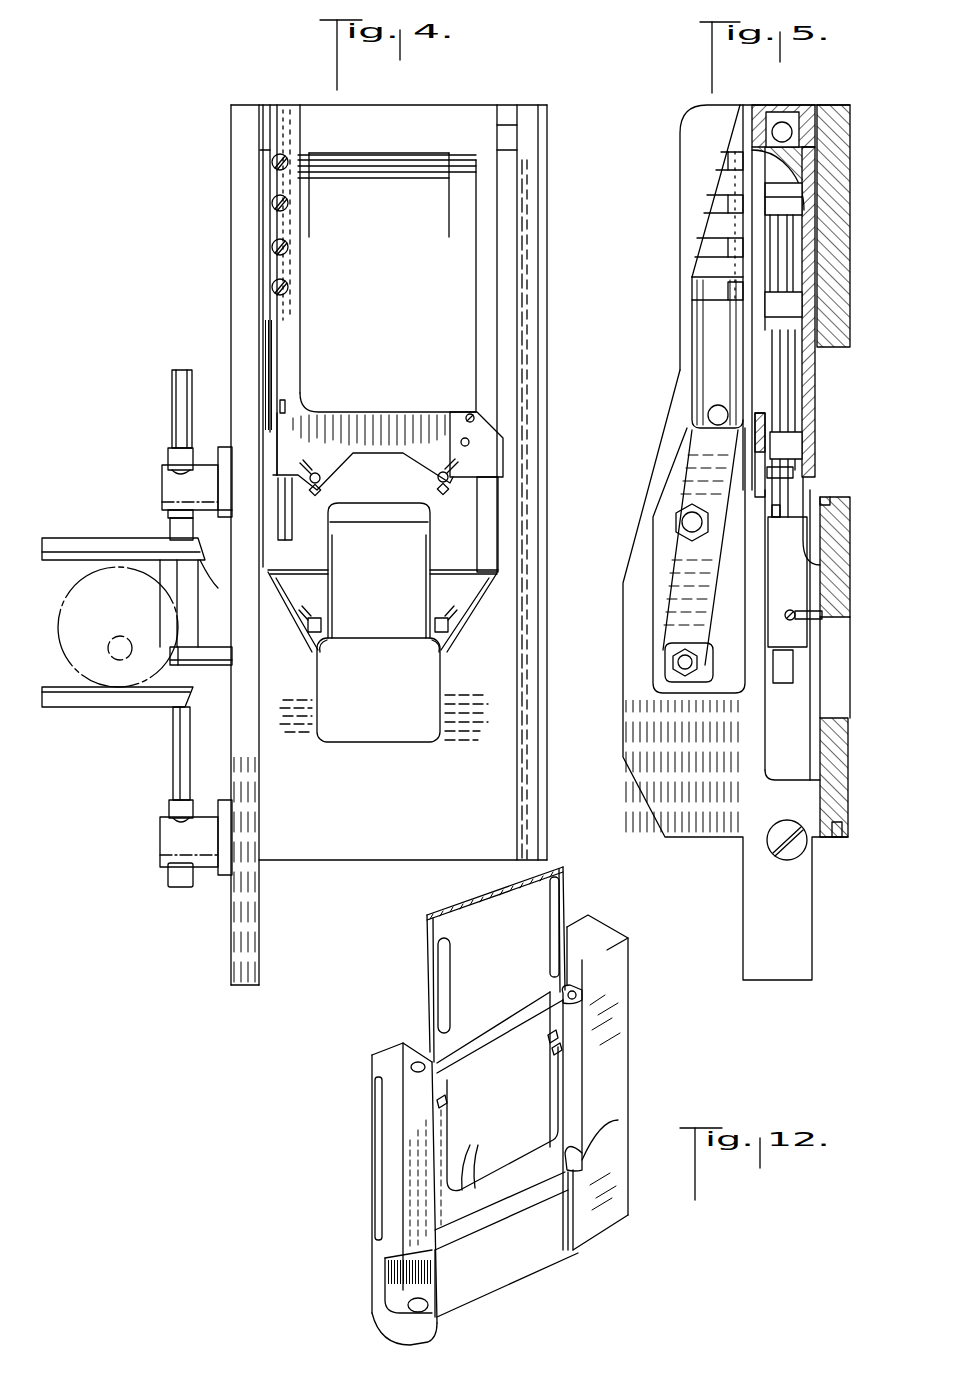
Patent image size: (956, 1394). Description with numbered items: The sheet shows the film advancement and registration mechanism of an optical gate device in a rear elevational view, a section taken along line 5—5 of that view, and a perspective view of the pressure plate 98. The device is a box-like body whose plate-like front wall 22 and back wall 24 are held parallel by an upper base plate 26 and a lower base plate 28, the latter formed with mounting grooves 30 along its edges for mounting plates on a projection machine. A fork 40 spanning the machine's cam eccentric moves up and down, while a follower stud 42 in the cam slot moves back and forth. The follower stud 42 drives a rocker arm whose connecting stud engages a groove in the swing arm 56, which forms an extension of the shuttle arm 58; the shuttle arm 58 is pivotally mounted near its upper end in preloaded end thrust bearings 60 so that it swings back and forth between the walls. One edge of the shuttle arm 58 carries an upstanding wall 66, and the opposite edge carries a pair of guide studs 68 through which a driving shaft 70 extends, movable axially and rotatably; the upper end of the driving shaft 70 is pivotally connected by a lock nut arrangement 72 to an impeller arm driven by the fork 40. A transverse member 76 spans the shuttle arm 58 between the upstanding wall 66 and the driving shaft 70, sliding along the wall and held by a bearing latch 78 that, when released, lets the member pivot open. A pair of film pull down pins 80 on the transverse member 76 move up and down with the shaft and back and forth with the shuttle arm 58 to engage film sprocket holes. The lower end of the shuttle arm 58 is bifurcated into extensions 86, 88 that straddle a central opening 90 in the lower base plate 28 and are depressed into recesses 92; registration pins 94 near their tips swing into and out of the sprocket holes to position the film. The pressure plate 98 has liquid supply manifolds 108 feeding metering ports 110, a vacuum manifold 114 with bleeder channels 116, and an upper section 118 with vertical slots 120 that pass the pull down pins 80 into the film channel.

In FIG. 4, the section line 5— 5 is at (378, 75).
In FIG. 4, the front wall 22 is at (540, 213).
In FIG. 4, the back wall 24 is at (245, 276).
In FIG. 5, the upper base plate 26 is at (850, 145).
In FIG. 4, the lower base plate 28 is at (310, 848).
In FIG. 5, the lower base plate 28 is at (835, 760).
In FIG. 5, the mounting grooves 30 is at (832, 500).
In FIG. 4, the fork 40 is at (68, 548).
In FIG. 4, the follower stud 42 is at (205, 665).
In FIG. 4, the swing arm 56 is at (292, 265).
In FIG. 4, the shuttle arm 58 is at (309, 125).
In FIG. 5, the shuttle arm 58 is at (815, 362).
In FIG. 4, the end thrust bearings 60 is at (260, 133).
In FIG. 5, the end thrust bearings 60 is at (782, 122).
In FIG. 4, the upstanding wall 66 is at (476, 365).
In FIG. 5, the guide studs 68 is at (795, 300).
In FIG. 4, the driving shaft 70 is at (291, 528).
In FIG. 5, the driving shaft 70 is at (785, 250).
In FIG. 5, the lock nut arrangement 72 is at (790, 205).
In FIG. 4, the transverse member 76 is at (402, 427).
In FIG. 5, the transverse member 76 is at (757, 357).
In FIG. 4, the bearing latch 78 is at (490, 450).
In FIG. 4, the film pull down pins 80 is at (320, 492).
In FIG. 5, the film pull down pins 80 is at (773, 490).
In FIG. 4, the extension 86 is at (318, 583).
In FIG. 5, the extension 86 is at (852, 583).
In FIG. 4, the extension 88 is at (440, 591).
In FIG. 4, the central opening 90 is at (361, 735).
In FIG. 5, the central opening 90 is at (840, 700).
In FIG. 4, the recesses 92 is at (312, 650).
In FIG. 4, the registration pins 94 is at (325, 642).
In FIG. 5, the registration pins 94 is at (788, 610).
In FIG. 12, the pressure plate 98 is at (640, 1077).
In FIG. 12, the liquid supply manifolds 108 is at (582, 995).
In FIG. 12, the metering ports 110 is at (470, 1165).
In FIG. 12, the vacuum manifold 114 is at (575, 1040).
In FIG. 12, the bleeder channels 116 is at (555, 1055).
In FIG. 12, the upper section 118 is at (455, 924).
In FIG. 12, the vertical slots 120 is at (552, 900).